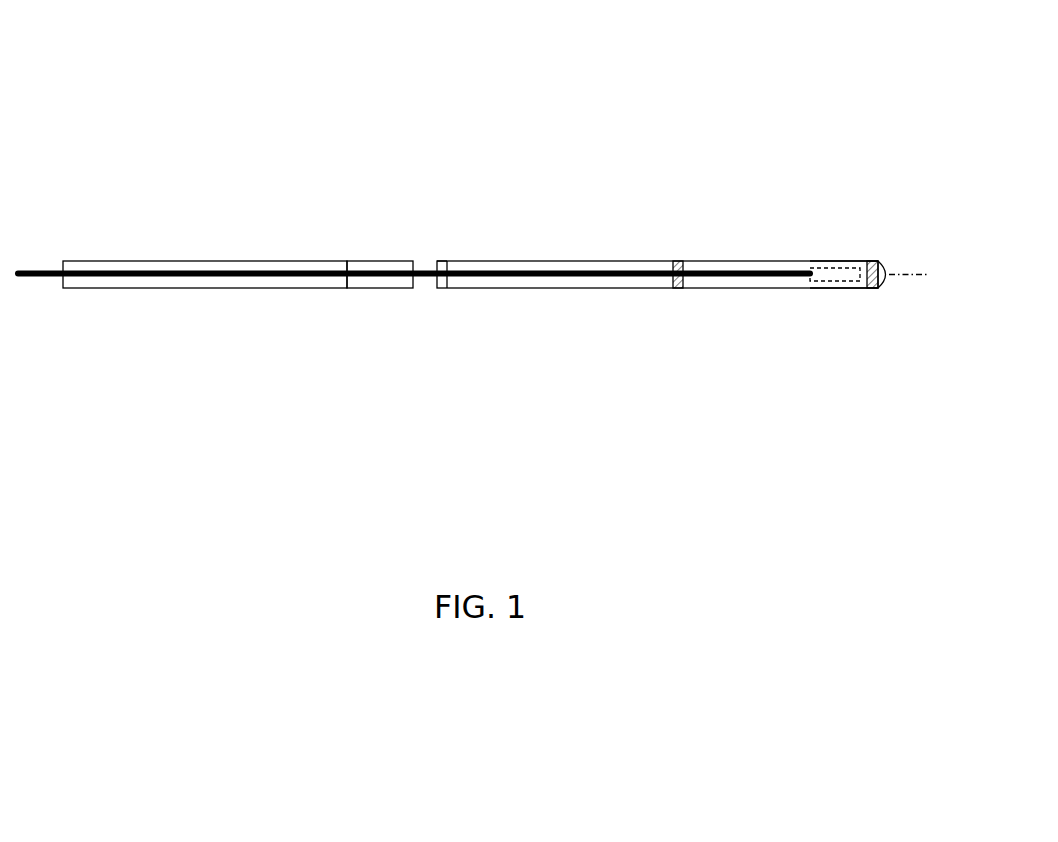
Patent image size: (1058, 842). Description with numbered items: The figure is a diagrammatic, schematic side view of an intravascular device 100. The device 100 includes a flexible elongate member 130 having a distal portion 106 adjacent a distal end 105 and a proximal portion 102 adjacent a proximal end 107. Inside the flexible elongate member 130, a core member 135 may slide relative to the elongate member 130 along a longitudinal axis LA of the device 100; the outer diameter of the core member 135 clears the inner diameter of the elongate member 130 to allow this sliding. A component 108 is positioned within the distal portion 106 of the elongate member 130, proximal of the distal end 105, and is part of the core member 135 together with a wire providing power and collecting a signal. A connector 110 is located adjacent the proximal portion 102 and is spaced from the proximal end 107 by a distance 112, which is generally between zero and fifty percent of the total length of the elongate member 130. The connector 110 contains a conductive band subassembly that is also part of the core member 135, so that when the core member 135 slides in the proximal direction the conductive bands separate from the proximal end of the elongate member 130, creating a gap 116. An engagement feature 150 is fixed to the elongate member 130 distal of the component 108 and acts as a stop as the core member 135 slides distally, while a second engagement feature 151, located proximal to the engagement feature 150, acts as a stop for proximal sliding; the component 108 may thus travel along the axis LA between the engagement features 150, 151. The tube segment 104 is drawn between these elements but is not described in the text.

The intravascular device 100 is at (238, 64).
The proximal portion 102 is at (113, 260).
The distal tube 104 is at (597, 260).
The distal end 105 is at (883, 291).
The distal portion 106 is at (849, 261).
The proximal end 107 is at (62, 260).
The component 108 is at (823, 283).
The connector 110 is at (381, 294).
The distance 112 is at (343, 301).
The gap 116 is at (413, 280).
The flexible elongate member 130 is at (468, 261).
The core member 135 is at (447, 266).
The engagement feature 150 is at (872, 261).
The second engagement feature 151 is at (683, 261).
The longitudinal axis LA is at (908, 276).